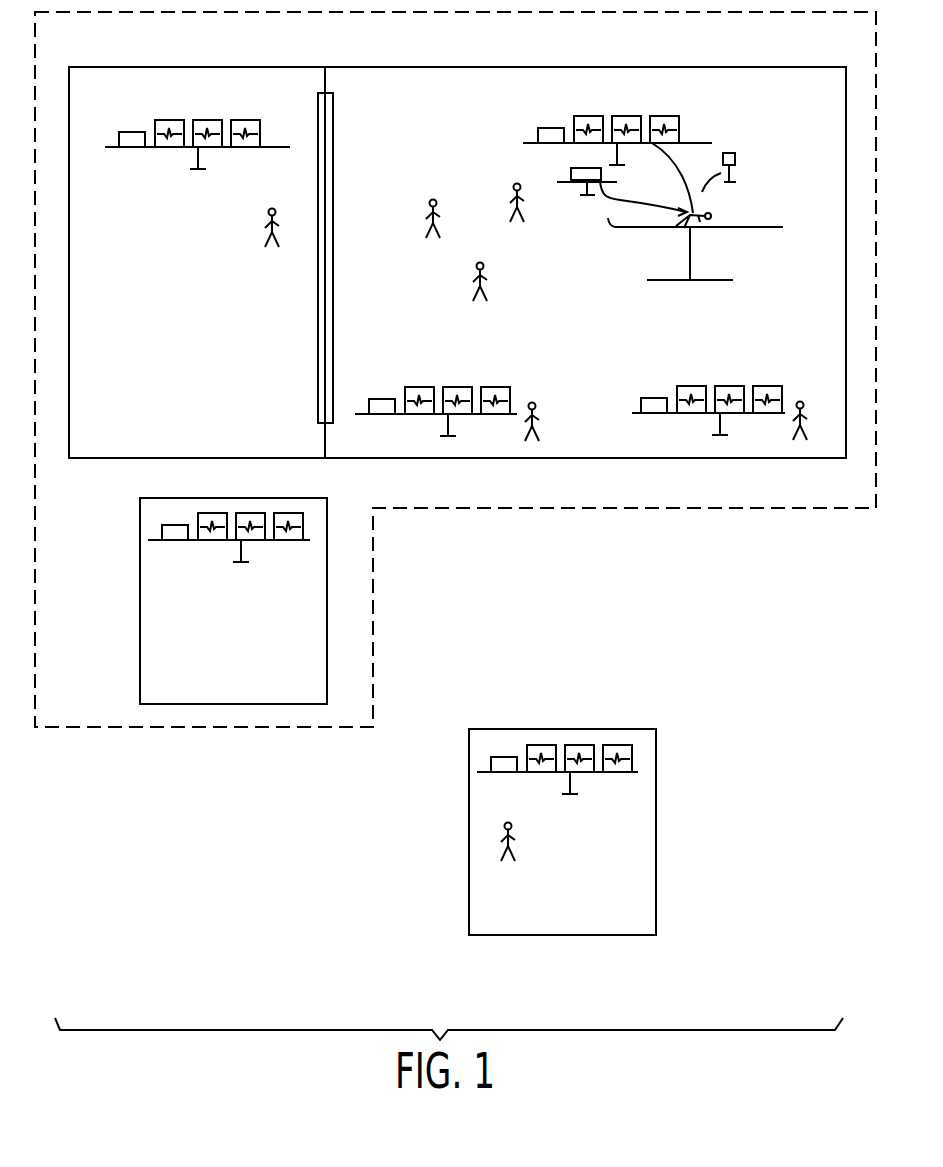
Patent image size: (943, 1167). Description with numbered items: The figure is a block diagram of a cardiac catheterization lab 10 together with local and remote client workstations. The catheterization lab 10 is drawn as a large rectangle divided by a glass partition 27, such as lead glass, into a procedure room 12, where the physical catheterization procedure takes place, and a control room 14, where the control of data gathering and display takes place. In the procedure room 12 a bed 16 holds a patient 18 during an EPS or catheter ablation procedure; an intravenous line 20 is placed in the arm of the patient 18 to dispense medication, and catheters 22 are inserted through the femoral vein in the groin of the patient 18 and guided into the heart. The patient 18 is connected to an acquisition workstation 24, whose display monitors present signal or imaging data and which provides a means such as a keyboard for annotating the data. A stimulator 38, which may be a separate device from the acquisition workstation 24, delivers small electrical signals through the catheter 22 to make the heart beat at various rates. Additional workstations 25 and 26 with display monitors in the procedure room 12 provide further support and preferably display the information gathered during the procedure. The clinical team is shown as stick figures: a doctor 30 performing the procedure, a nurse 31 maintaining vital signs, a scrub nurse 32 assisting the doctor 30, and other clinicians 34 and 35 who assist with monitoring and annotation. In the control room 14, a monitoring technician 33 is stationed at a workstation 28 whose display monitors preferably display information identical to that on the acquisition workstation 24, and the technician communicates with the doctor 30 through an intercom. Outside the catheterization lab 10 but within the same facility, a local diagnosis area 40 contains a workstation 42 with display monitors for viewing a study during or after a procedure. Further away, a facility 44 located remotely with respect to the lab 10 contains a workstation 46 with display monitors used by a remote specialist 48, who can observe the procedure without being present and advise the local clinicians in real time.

The catheterization lab 10 is at (69, 263).
The procedure room 12 is at (437, 80).
The control room 14 is at (258, 76).
The bed 16 is at (765, 229).
The patient 18 is at (711, 216).
The intravenous (IV) line 20 is at (697, 212).
The catheters 22 is at (603, 197).
The acquisition workstation 24 is at (560, 108).
The workstation 25 is at (459, 366).
The workstation 26 is at (716, 368).
The glass partition 27 is at (323, 410).
The workstation 28 is at (169, 176).
The doctor 30 is at (513, 186).
The nurse 31 is at (430, 203).
The scrub nurse 32 is at (485, 262).
The monitoring technician 33 is at (266, 237).
The clinician 34 is at (536, 402).
The clinician 35 is at (803, 401).
The stimulator 38 is at (572, 173).
The local diagnosis area 40 is at (140, 552).
The workstation 42 is at (282, 547).
The facility 44 is at (469, 800).
The workstation 46 is at (605, 780).
The remote specialist 48 is at (512, 849).